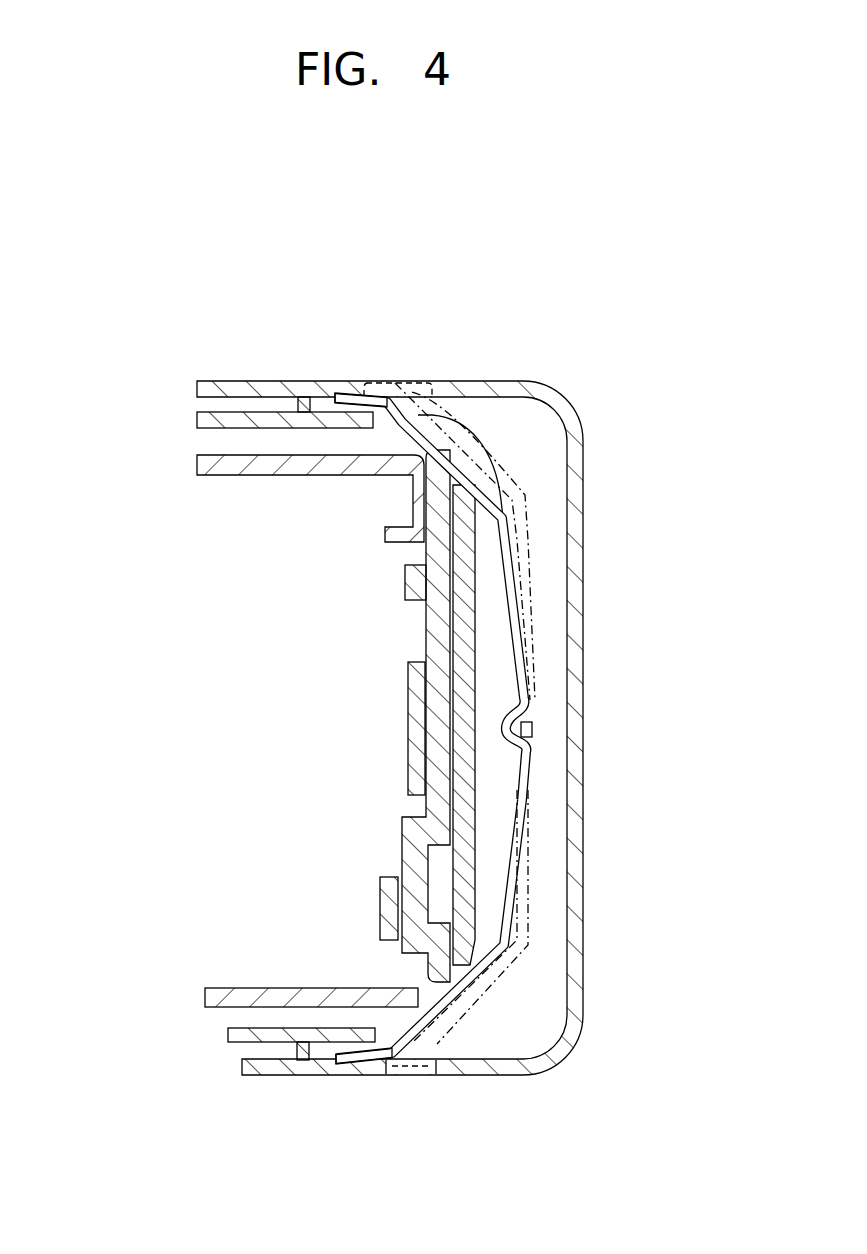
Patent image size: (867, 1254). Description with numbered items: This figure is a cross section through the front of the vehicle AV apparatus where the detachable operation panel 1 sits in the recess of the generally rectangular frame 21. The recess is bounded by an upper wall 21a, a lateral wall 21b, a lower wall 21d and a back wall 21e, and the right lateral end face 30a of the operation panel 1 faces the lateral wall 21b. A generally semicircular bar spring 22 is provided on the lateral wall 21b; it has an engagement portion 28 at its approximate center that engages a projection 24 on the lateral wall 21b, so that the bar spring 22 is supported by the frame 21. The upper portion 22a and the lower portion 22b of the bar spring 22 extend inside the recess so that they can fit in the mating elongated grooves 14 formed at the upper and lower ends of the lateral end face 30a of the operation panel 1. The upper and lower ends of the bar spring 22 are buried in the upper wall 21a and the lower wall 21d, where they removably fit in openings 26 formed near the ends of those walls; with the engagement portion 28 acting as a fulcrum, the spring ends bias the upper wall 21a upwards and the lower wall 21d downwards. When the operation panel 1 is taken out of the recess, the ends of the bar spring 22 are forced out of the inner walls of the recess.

The operation panel 1 is at (243, 472).
The elongated groove 14 is at (425, 1048).
The frame 21 is at (391, 701).
The upper wall 21a is at (222, 432).
The lateral wall 21b is at (567, 563).
The lower wall 21d is at (242, 1028).
The back wall 21e is at (292, 787).
The bar spring 22 is at (504, 729).
The upper portion of bar spring 22a is at (388, 393).
The lower portion of bar spring 22b is at (392, 1053).
The projection 24 is at (532, 732).
The opening 26 is at (340, 378).
The engagement portion 28 is at (530, 706).
The right lateral end face 30a is at (500, 790).